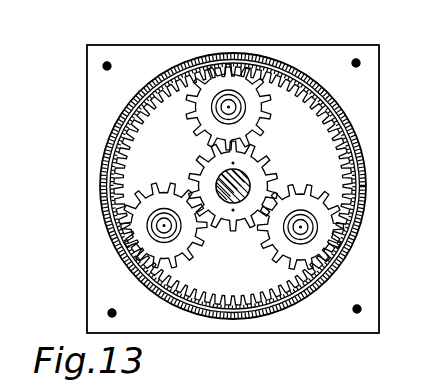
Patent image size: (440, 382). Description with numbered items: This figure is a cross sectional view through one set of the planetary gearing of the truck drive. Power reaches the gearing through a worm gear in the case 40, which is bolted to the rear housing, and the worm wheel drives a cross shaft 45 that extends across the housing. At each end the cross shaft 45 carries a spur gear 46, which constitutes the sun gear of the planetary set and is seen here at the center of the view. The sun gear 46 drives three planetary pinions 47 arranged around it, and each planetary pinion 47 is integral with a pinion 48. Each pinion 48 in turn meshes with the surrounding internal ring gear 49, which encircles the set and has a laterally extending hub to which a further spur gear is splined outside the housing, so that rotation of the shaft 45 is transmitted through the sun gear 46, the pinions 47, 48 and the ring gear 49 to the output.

The case 40 is at (87, 262).
The cross shaft 45 is at (246, 184).
The spur gear 46 is at (275, 159).
The planetary pinions 47 is at (262, 121).
The pinion 48 is at (265, 108).
The internal ring gear 49 is at (338, 263).